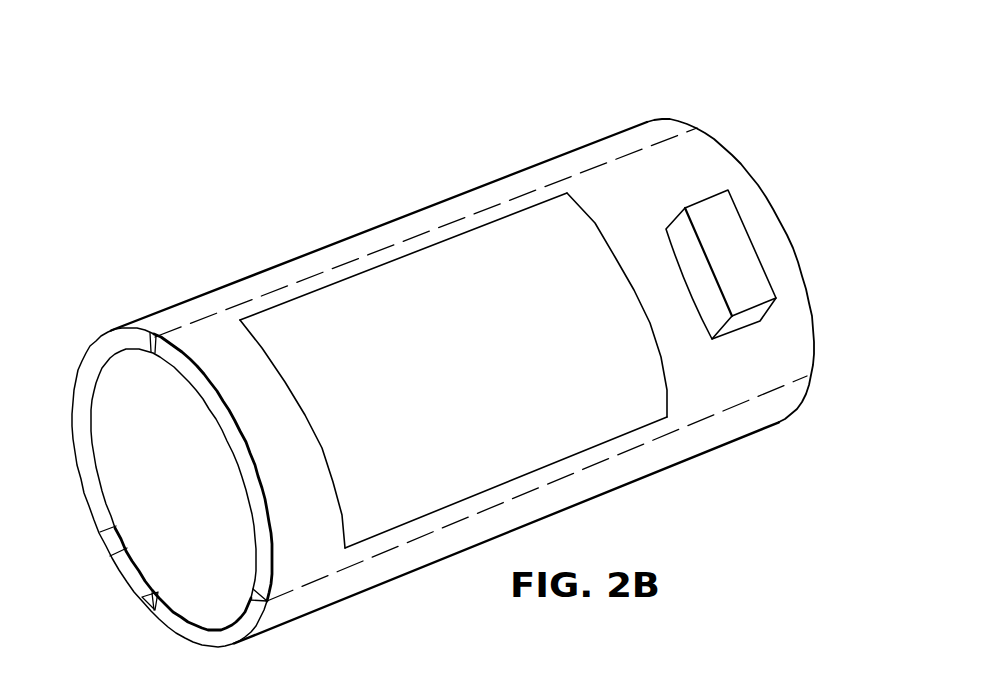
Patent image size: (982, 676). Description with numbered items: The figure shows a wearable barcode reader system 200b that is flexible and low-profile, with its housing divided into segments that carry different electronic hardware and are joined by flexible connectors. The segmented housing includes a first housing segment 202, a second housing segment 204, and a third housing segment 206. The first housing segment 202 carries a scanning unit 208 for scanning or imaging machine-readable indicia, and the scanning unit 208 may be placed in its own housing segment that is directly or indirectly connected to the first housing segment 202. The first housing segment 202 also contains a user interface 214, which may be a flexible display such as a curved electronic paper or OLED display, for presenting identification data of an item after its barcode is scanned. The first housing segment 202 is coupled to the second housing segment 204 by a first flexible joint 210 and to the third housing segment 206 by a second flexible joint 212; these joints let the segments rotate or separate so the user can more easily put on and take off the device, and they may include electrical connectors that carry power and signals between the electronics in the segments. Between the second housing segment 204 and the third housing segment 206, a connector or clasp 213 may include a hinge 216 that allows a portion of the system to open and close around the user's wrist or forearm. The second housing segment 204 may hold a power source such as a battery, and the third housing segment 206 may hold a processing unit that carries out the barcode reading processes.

The barcode reader system 200b is at (462, 348).
The first housing segment 202 is at (800, 342).
The second housing segment 204 is at (393, 232).
The third housing segment 206 is at (725, 425).
The scanning unit 208 is at (740, 250).
The first flexible joint 210 is at (150, 357).
The second flexible joint 212 is at (250, 597).
The connector or clasp 213 is at (105, 545).
The user interface 214 is at (318, 318).
The hinge 216 is at (142, 600).